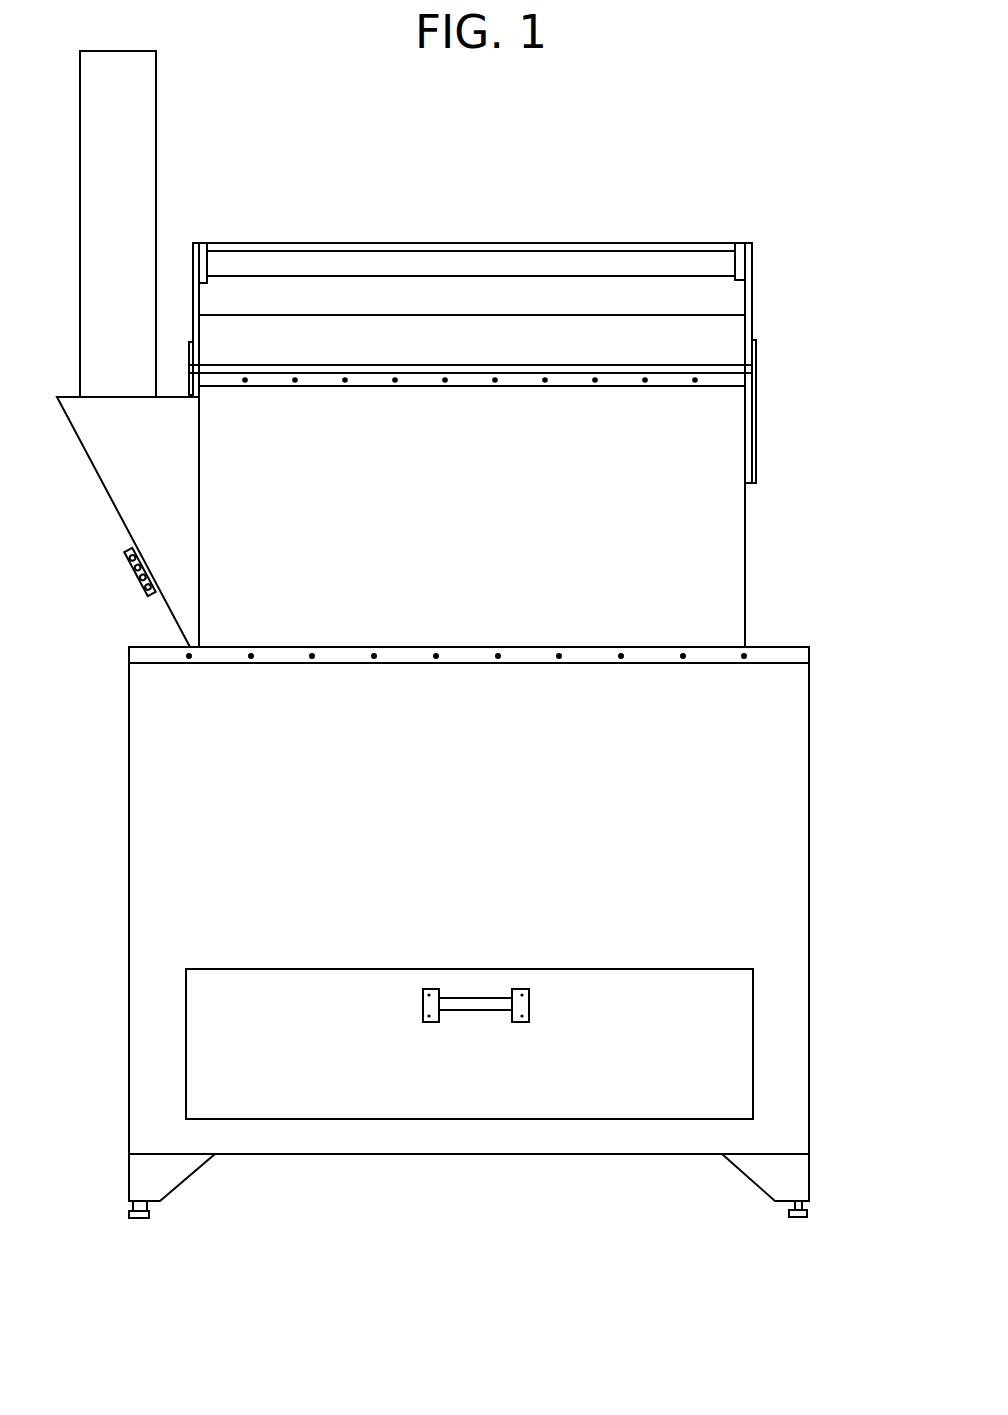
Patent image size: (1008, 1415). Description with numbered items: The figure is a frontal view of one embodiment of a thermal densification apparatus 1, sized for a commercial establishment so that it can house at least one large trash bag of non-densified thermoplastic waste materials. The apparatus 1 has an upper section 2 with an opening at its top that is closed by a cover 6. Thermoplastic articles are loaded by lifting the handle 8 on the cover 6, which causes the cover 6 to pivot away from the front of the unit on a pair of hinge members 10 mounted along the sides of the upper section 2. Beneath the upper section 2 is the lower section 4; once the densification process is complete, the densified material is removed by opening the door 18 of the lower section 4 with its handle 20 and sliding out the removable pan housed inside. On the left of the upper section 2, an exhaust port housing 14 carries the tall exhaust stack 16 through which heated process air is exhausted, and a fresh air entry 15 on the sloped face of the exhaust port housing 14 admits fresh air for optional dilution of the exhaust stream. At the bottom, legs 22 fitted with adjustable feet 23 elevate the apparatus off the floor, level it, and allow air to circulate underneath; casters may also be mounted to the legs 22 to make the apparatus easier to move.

The thermal densification apparatus 1 is at (812, 607).
The upper section 2 is at (747, 568).
The lower section 4 is at (810, 801).
The cover 6 is at (725, 343).
The handle 8 is at (570, 250).
The hinge members 10 is at (753, 428).
The exhaust port housing 14 is at (73, 430).
The fresh air entry 15 is at (137, 578).
The exhaust stack 16 is at (80, 245).
The door 18 is at (645, 968).
The handle 20 is at (460, 1013).
The legs 22 is at (184, 1181).
The adjustable feet 23 is at (133, 1220).